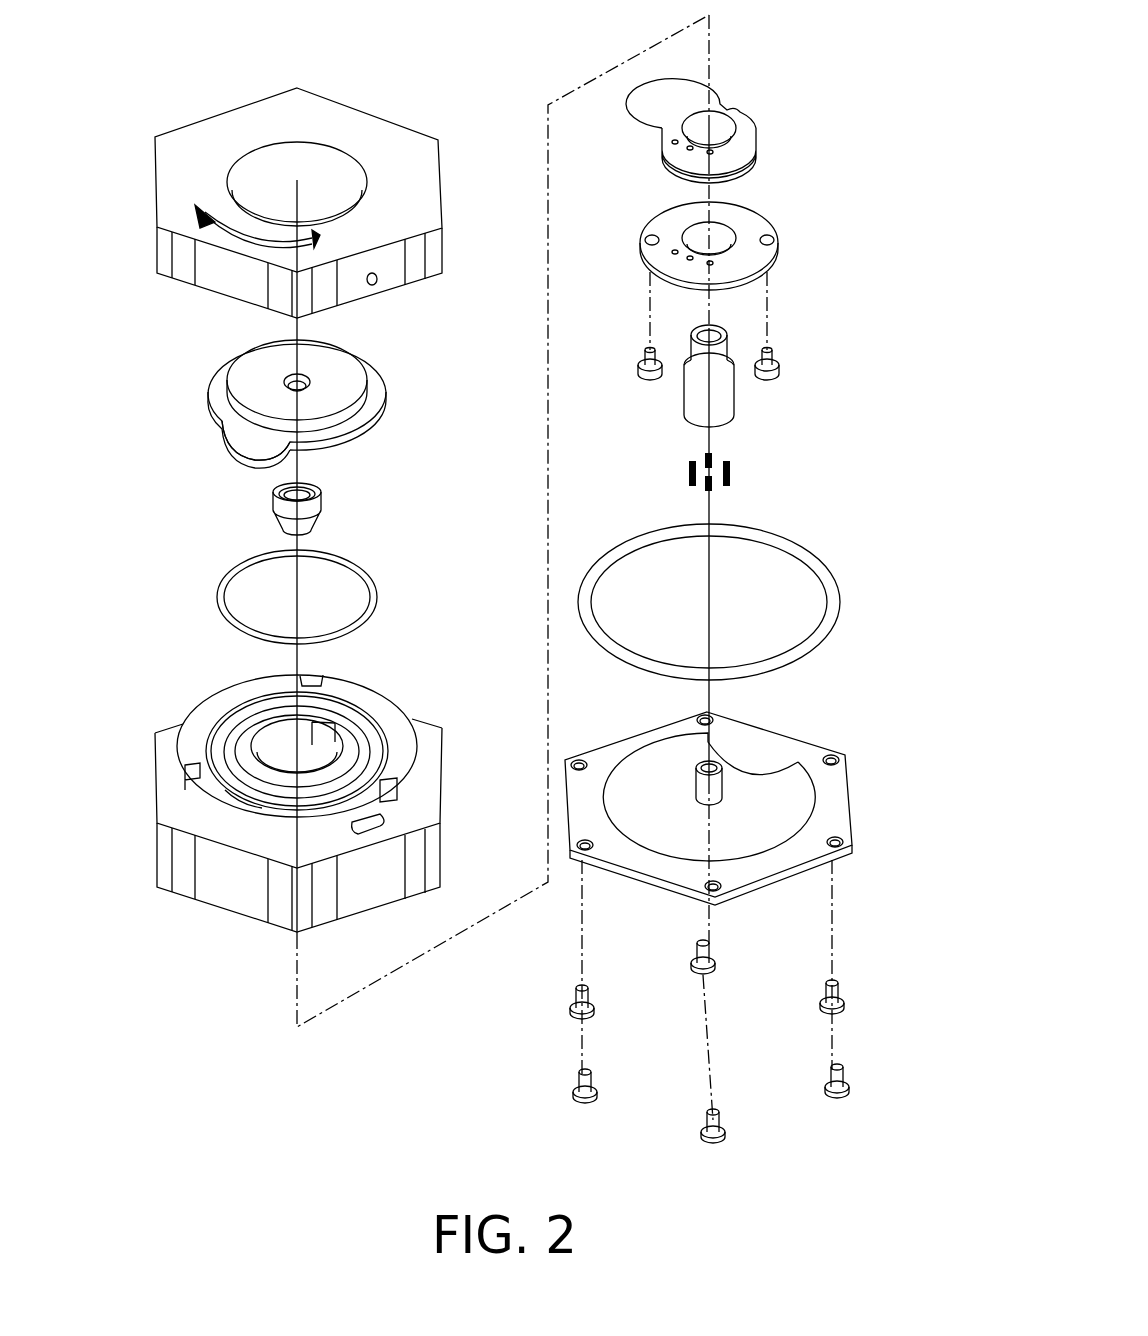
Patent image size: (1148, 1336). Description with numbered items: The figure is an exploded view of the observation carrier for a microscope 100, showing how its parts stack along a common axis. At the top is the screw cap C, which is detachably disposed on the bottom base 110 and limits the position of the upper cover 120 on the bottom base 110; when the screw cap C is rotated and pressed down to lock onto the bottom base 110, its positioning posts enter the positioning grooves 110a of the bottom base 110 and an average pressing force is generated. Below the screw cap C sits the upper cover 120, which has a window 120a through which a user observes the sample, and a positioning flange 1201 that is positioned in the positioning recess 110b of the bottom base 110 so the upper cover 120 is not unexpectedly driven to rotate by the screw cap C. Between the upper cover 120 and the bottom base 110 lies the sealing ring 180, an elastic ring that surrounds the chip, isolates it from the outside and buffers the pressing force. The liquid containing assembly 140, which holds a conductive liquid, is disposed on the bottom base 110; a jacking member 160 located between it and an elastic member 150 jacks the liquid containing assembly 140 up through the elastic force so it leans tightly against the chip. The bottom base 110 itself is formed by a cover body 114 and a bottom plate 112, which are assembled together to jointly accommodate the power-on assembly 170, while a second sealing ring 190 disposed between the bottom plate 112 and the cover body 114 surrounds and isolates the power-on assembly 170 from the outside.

The observation carrier for a microscope 100 is at (949, 1174).
The screw cap C is at (410, 183).
The bottom base 110 is at (528, 628).
The positioning groove 110a is at (377, 824).
The positioning recess 110b is at (242, 796).
The bottom plate 112 is at (620, 748).
The cover body 114 is at (295, 783).
The upper cover 120 is at (308, 390).
The window 120a is at (289, 377).
The positioning flange 1201 is at (243, 443).
The liquid containing assembly 140 is at (275, 512).
The elastic member 150 is at (730, 462).
The jacking member 160 is at (697, 402).
The power-on assembly 170 is at (667, 148).
The sealing ring 180 is at (247, 557).
The sealing ring 190 is at (642, 542).